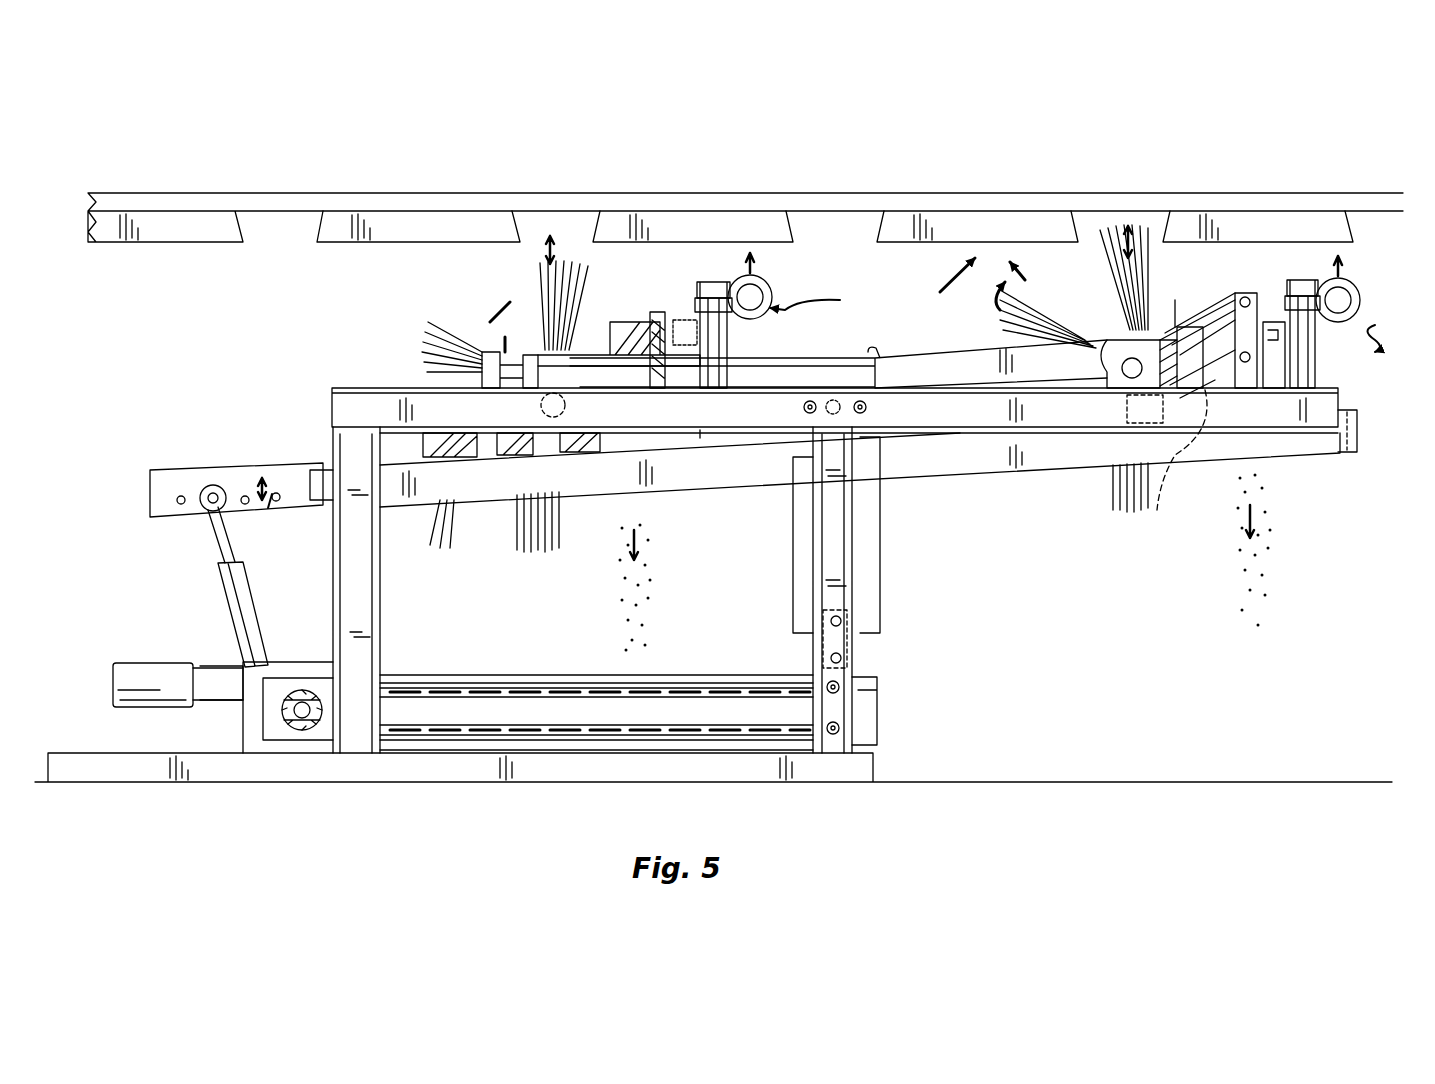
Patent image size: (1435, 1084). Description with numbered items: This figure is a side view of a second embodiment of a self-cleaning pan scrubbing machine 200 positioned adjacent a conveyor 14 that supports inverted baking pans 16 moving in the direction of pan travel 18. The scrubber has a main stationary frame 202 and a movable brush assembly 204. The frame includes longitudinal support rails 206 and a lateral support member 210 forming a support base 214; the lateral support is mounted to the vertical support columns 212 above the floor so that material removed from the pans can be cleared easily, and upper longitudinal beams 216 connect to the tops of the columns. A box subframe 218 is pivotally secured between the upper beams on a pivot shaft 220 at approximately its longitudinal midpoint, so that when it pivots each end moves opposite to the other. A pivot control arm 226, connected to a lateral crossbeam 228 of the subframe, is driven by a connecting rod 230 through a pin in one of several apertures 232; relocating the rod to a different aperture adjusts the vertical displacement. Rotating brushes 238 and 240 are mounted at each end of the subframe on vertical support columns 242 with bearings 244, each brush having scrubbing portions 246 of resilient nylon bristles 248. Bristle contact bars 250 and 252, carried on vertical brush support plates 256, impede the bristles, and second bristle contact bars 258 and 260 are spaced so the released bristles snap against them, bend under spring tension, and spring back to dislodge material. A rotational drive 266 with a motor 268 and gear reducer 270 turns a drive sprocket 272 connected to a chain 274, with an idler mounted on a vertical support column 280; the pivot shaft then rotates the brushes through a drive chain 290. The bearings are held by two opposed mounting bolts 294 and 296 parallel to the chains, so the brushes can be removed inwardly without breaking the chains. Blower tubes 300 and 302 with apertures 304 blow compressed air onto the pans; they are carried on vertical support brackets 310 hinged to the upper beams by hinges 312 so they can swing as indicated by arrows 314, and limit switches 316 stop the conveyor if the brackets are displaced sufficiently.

The conveyor 14 is at (1390, 184).
The baking pans 16 is at (952, 281).
The direction of pan travel 18 is at (1362, 222).
The pan scrubbing machine 200 is at (322, 410).
The main stationary frame 202 is at (352, 380).
The movable brush assembly 204 is at (935, 485).
The longitudinal support rails 206 is at (70, 753).
The lateral support member 210 is at (822, 640).
The vertical support columns 212 is at (333, 556).
The support base 214 is at (900, 740).
The upper longitudinal beams 216 is at (1318, 412).
The box subframe 218 is at (1350, 455).
The pivot shaft 220 is at (870, 410).
The pivot control arm 226 is at (235, 450).
The lateral crossbeam 228 is at (318, 465).
The connecting rod 230 is at (222, 588).
The apertures 232 is at (200, 508).
The rotating brush 238 is at (460, 318).
The rotating brush 240 is at (1232, 296).
The vertical support columns 242 is at (480, 372).
The bearings 244 is at (570, 408).
The scrubbing portions 246 is at (640, 320).
The bristles 248 is at (565, 270).
The bristle contact bar 250 is at (1205, 380).
The bristle contact bar 252 is at (660, 312).
The vertical brush support plates 256 is at (682, 385).
The second bristle contact bar 258 is at (1210, 455).
The bristle contact bar 260 is at (708, 452).
The rotational drive 266 is at (165, 660).
The motor 268 is at (122, 663).
The gear reducer 270 is at (294, 663).
The drive sprocket 272 is at (300, 735).
The chain 274 is at (425, 688).
The vertical support column 280 is at (880, 660).
The drive chain 290 is at (790, 375).
The mounting bolt 294 is at (1175, 282).
The mounting bolt 296 is at (500, 460).
The blower tube 300 is at (772, 297).
The blower tube 302 is at (1362, 302).
The apertures 304 is at (775, 285).
The vertical support brackets 310 is at (715, 282).
The hinges 312 is at (733, 376).
The arrows 314 is at (1098, 318).
The limit switches 316 is at (640, 328).